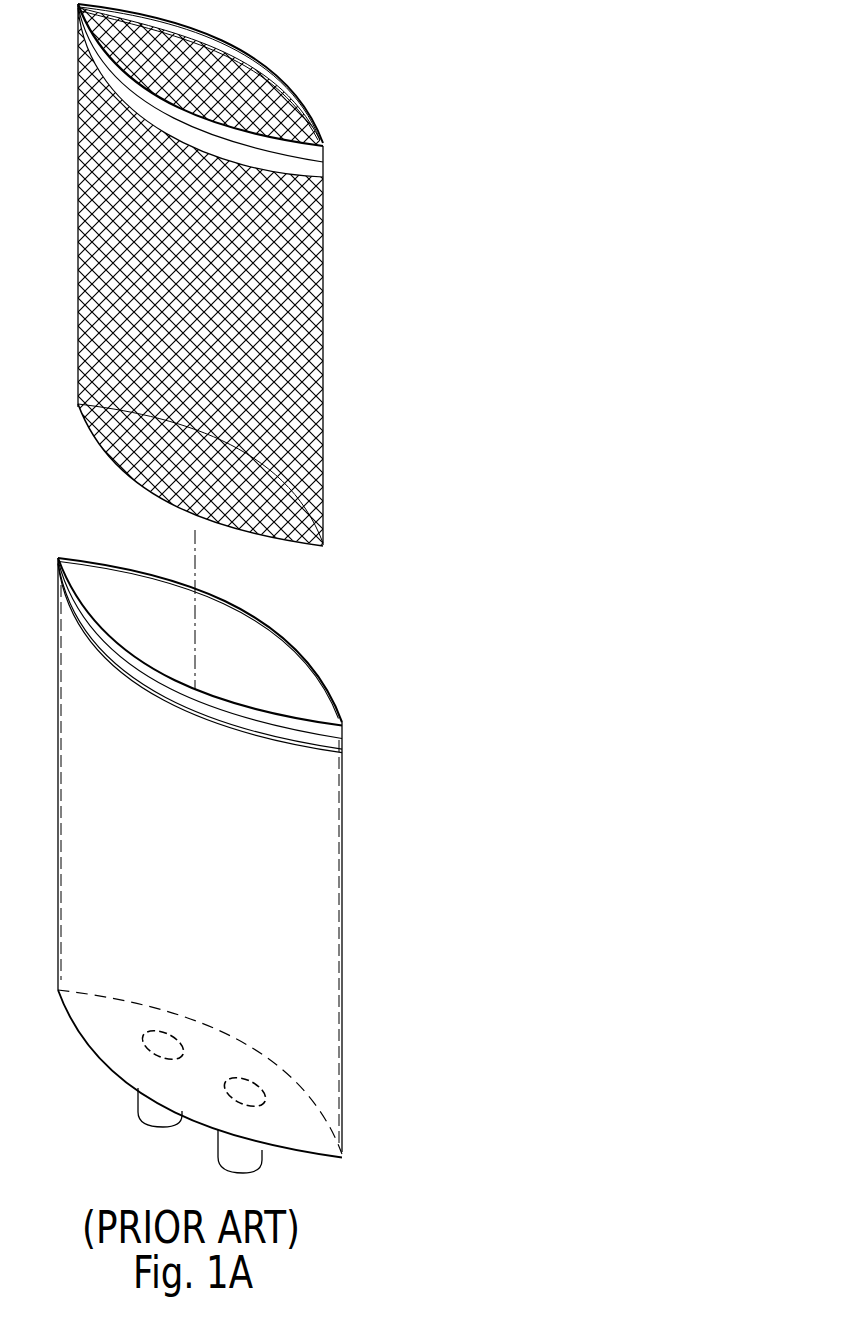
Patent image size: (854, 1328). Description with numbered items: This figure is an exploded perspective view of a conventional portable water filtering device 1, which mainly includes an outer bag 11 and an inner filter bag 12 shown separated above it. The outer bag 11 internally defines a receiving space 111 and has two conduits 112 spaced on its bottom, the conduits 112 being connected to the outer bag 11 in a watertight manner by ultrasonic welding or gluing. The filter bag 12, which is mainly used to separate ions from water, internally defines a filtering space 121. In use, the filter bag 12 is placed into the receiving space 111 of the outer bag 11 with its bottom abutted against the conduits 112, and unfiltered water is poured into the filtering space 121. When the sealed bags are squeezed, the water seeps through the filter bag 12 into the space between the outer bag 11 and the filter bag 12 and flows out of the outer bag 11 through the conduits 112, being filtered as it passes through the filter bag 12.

The water filtering device 1 is at (541, 159).
The outer bag 11 is at (343, 935).
The receiving space 111 is at (258, 675).
The conduits 112 is at (245, 1153).
The filter bag 12 is at (320, 363).
The filtering space 121 is at (252, 115).